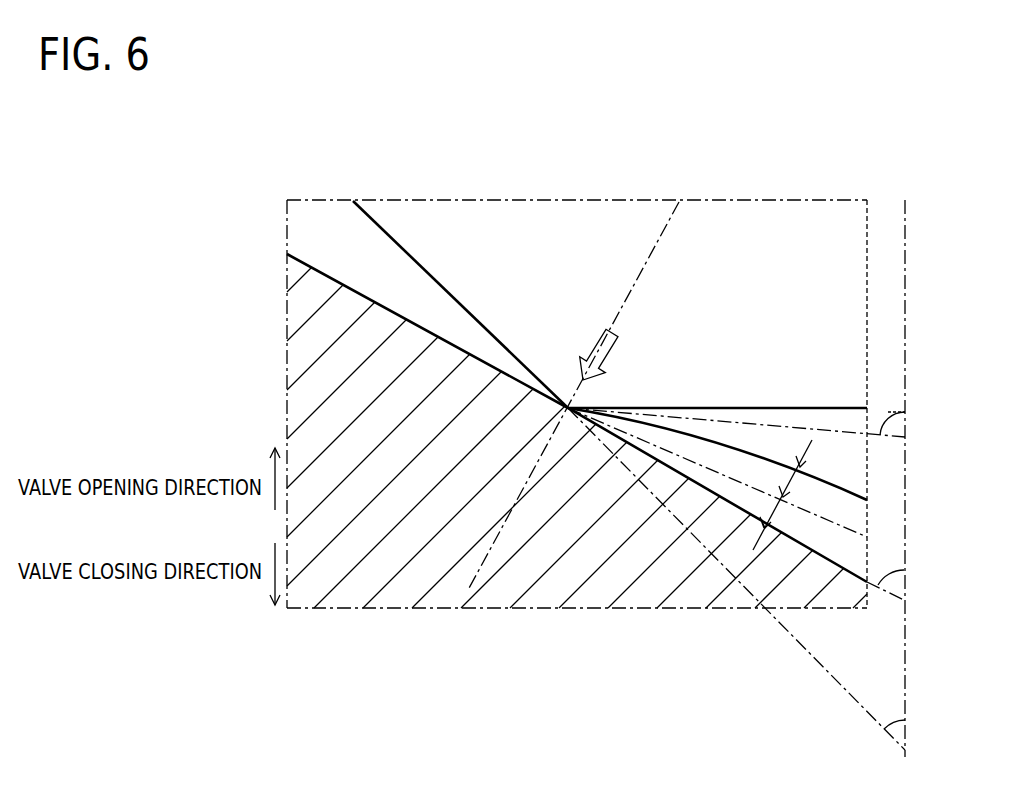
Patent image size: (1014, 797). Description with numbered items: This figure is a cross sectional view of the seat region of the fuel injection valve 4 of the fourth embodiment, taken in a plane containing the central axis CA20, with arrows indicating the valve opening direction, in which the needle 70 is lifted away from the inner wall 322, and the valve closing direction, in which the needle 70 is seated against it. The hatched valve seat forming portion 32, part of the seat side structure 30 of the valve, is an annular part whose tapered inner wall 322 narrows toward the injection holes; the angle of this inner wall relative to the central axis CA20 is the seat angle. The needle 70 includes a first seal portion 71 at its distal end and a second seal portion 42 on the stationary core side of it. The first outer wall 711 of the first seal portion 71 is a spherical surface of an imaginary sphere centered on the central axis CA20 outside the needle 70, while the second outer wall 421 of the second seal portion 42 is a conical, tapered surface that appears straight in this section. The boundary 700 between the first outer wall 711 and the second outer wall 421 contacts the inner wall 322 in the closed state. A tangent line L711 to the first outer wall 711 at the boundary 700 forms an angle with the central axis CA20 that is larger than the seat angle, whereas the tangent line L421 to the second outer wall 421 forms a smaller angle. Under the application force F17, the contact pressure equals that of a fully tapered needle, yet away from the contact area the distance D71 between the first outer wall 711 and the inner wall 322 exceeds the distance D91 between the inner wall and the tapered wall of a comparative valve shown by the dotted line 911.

The valve seat member 30 is at (283, 402).
The valve seat forming portion 32 is at (300, 373).
The inner wall 322 is at (318, 271).
The second outer wall 421 is at (457, 303).
The second seal portion 42 is at (727, 243).
The fuel injection valve 4 is at (868, 199).
The needle 70 is at (679, 200).
The first seal portion 71 is at (770, 437).
The boundary 700 is at (653, 410).
The first outer wall 711 is at (837, 490).
The dotted line 911 is at (733, 480).
The distance D71 is at (785, 515).
The distance D91 is at (795, 480).
The application force F17 is at (594, 337).
The central axis CA20 is at (905, 220).
The tangent line L711 is at (858, 407).
The tangent line L421 is at (872, 713).